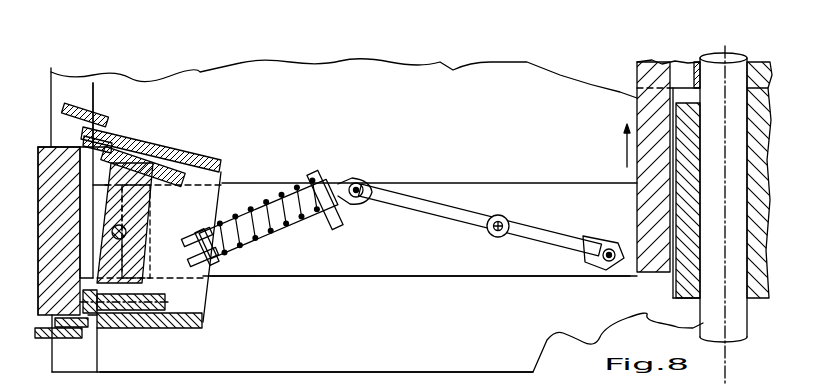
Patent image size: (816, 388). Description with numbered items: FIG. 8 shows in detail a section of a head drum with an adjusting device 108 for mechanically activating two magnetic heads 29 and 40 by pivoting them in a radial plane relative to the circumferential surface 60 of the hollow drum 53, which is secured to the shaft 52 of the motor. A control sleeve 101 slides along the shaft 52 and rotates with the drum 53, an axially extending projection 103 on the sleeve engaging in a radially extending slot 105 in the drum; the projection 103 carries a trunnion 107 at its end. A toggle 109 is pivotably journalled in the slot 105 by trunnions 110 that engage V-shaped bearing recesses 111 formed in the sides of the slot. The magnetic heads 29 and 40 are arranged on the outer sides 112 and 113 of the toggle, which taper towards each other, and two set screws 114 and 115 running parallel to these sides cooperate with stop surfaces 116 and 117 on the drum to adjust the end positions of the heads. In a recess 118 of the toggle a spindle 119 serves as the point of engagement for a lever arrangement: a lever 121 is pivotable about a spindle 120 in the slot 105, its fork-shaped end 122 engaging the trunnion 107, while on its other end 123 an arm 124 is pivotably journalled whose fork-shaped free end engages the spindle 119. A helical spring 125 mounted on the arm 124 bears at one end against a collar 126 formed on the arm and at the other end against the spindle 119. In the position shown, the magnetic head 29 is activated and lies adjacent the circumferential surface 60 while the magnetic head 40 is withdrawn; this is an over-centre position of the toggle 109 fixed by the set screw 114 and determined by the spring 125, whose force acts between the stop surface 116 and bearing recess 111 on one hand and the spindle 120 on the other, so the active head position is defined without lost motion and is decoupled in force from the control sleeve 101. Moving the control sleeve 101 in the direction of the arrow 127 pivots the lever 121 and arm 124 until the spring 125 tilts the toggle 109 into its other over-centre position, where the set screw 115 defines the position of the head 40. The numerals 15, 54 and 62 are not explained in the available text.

The frame member 15 is at (262, 282).
The magnetic head 29 is at (45, 340).
The magnetic head 40 is at (103, 120).
The shaft 52 is at (713, 70).
The hollow drum 53 is at (58, 153).
The base member 54 is at (240, 372).
The circumferential surface 60 is at (36, 147).
The housing 62 is at (78, 88).
The control sleeve 101 is at (630, 80).
The projection 103 is at (637, 107).
The slot 105 is at (597, 197).
The trunnion 107 is at (617, 260).
The adjusting device 108 is at (285, 185).
The toggle 109 is at (220, 157).
The trunnions 110 is at (126, 228).
The V-shaped bearing recesses 111 is at (134, 236).
The outer side 112 is at (148, 328).
The outer side 113 is at (145, 132).
The set screw 114 is at (158, 289).
The set screw 115 is at (168, 152).
The stop surface 116 is at (88, 328).
The stop surface 117 is at (94, 150).
The recess 118 is at (207, 177).
The spindle 119 is at (197, 242).
The spindle 120 is at (507, 227).
The lever 121 is at (465, 210).
The fork-shaped end 122 is at (590, 268).
The other end 123 is at (370, 189).
The arm 124 is at (257, 245).
The helical spring 125 is at (333, 235).
The collar 126 is at (302, 231).
The arrow 127 is at (622, 143).